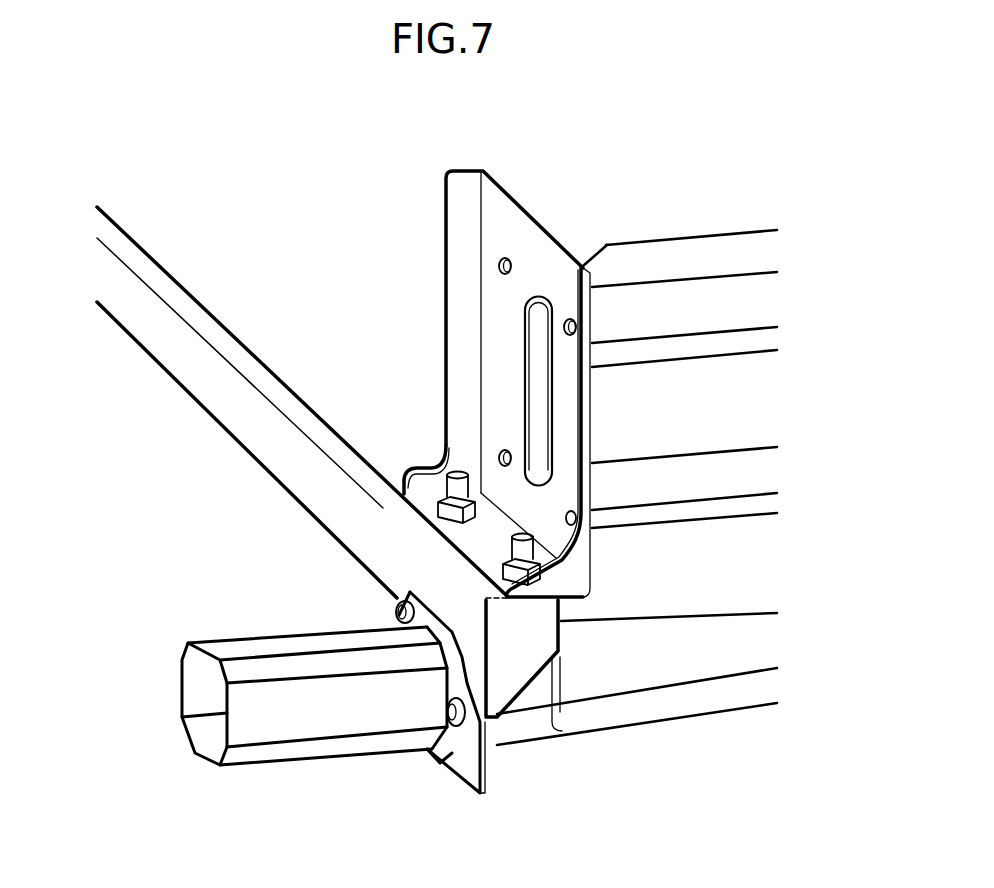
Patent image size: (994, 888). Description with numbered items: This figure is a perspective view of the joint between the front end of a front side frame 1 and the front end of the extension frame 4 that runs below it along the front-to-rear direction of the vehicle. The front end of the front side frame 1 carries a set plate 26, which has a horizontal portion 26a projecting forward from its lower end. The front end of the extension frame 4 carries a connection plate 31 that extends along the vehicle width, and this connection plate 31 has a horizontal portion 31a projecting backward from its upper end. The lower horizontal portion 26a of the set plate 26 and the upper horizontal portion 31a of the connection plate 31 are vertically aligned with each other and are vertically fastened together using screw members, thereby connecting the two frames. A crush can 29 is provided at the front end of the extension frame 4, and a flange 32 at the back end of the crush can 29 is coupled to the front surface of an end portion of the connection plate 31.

The front side frame 1 is at (669, 253).
The extension frame 4 is at (653, 700).
The set plate 26 is at (503, 225).
The horizontal portion 26a is at (483, 540).
The crush can 29 is at (275, 725).
The connection plate 31 is at (147, 315).
The horizontal portion 31a is at (405, 513).
The flange 32 is at (447, 752).